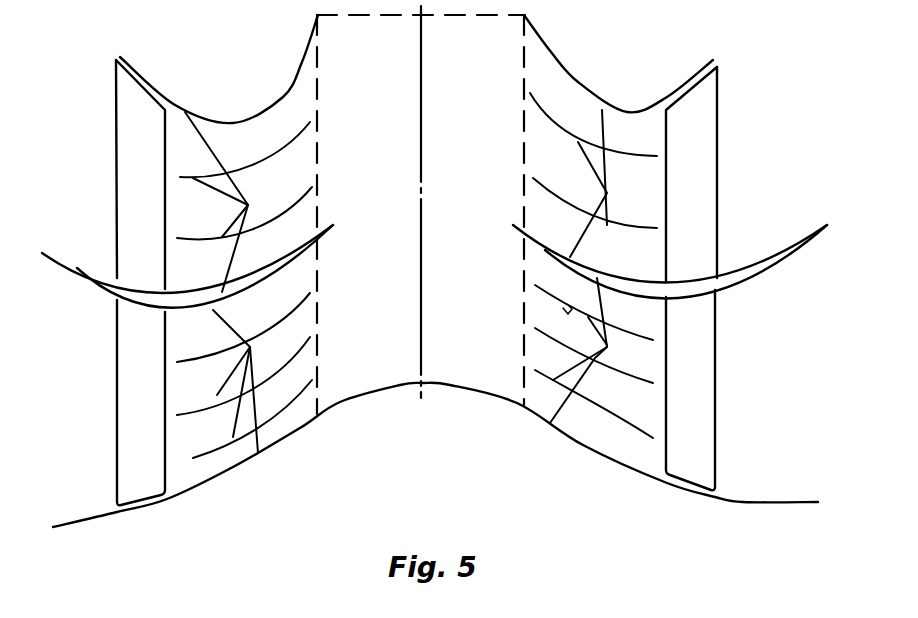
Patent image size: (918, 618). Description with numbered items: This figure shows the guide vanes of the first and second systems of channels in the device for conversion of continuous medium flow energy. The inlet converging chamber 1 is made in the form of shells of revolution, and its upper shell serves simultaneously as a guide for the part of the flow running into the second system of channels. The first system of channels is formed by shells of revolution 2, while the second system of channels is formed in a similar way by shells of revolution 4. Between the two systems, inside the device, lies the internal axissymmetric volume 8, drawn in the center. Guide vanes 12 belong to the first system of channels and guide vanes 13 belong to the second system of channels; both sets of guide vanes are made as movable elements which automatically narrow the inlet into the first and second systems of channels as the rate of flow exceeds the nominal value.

The inlet converging chamber 1 is at (431, 271).
The shells of revolution 2 is at (415, 368).
The shells of revolution 4 is at (417, 192).
The internal axissymmetric volume 8 is at (421, 210).
The guide vanes 12 is at (416, 397).
The guide vanes 13 is at (416, 174).